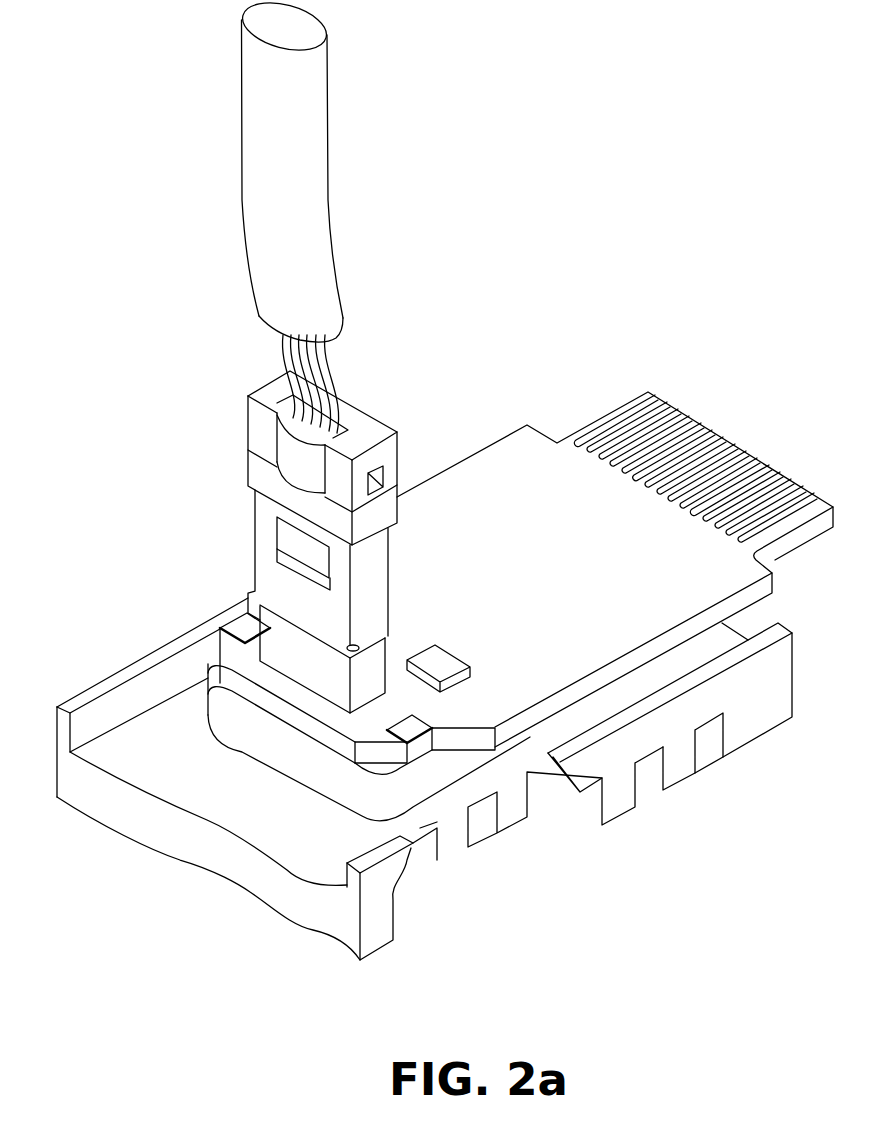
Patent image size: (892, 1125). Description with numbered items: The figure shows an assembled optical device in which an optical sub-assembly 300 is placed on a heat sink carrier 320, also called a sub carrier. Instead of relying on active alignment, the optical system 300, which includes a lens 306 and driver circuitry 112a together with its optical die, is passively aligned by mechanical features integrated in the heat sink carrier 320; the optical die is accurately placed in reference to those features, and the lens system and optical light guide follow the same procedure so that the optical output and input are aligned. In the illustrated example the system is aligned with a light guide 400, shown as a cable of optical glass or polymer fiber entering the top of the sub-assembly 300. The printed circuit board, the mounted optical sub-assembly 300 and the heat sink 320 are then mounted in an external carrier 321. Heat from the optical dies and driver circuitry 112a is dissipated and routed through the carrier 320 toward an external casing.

The optical sub-assembly 300 is at (178, 428).
The light guide 400 is at (297, 207).
The driver circuitry 112a is at (440, 662).
The lens 306 is at (305, 658).
The heat sink carrier 320 is at (287, 760).
The external carrier 321 is at (667, 725).